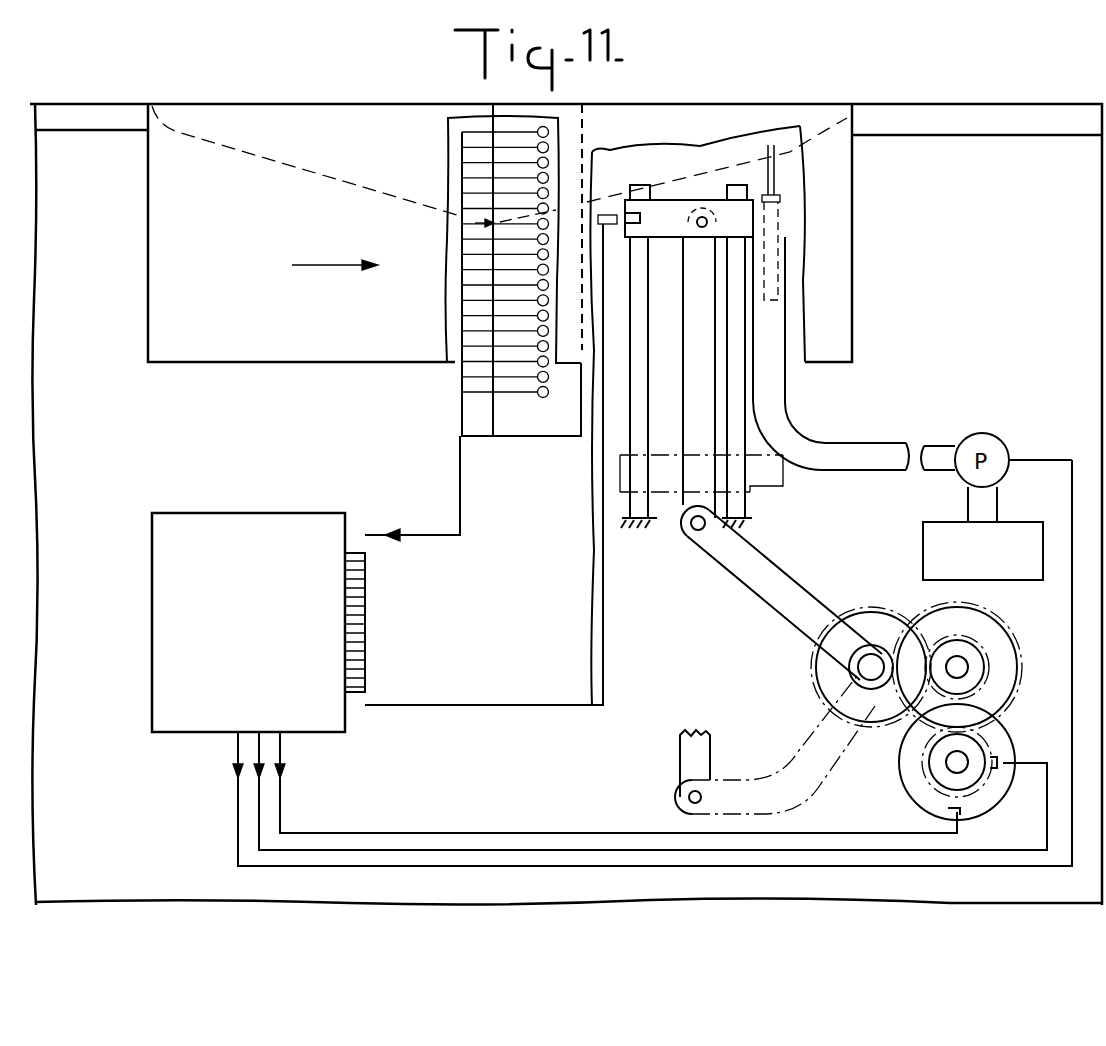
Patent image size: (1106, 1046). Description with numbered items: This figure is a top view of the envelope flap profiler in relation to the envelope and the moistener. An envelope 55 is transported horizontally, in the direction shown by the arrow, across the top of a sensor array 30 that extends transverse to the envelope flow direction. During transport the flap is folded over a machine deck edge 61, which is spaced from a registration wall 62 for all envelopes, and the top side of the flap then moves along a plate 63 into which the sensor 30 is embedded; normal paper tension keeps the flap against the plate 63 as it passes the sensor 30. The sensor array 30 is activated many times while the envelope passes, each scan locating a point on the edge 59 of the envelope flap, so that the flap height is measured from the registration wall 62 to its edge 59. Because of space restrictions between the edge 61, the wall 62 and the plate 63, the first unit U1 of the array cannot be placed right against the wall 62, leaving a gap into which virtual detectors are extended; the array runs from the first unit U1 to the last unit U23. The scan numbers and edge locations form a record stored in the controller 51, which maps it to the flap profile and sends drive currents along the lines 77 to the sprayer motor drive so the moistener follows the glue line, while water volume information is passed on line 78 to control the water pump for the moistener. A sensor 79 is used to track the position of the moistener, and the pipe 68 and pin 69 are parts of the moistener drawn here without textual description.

The sensor array 30 is at (541, 286).
The controller 51 is at (192, 727).
The envelope 55 is at (196, 345).
The flap edge 59 is at (795, 157).
The machine deck edge 61 is at (1020, 128).
The registration wall 62 is at (933, 108).
The plate 63 is at (562, 430).
The pipe 68 is at (802, 420).
The valve pin 69 is at (771, 145).
The lines 77 is at (380, 848).
The line 78 is at (325, 865).
The sensor 79 is at (606, 213).
The first unit U1 is at (549, 131).
The last sensor U23 is at (540, 398).